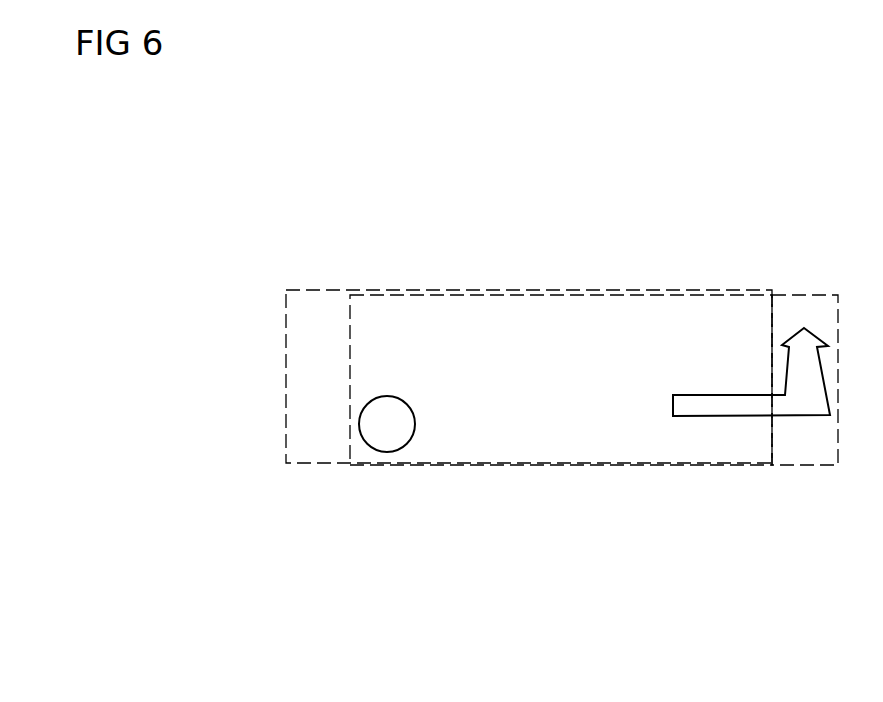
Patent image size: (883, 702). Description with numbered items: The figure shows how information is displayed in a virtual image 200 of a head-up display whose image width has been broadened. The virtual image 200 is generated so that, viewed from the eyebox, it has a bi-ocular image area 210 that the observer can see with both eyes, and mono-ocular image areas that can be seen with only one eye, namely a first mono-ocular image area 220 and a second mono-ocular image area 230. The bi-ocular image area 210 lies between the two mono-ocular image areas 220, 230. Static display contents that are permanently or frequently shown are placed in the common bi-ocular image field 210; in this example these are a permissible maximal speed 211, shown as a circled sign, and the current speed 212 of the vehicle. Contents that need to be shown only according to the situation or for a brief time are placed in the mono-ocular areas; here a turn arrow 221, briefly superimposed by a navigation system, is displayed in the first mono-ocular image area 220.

The virtual image 200 is at (551, 425).
The bi-ocular image area 210 is at (611, 310).
The permissible maximal speed 211 is at (393, 450).
The current speed 212 is at (523, 447).
The first mono-ocular image area 220 is at (818, 305).
The turn arrow 221 is at (815, 418).
The second mono-ocular image area 230 is at (329, 312).